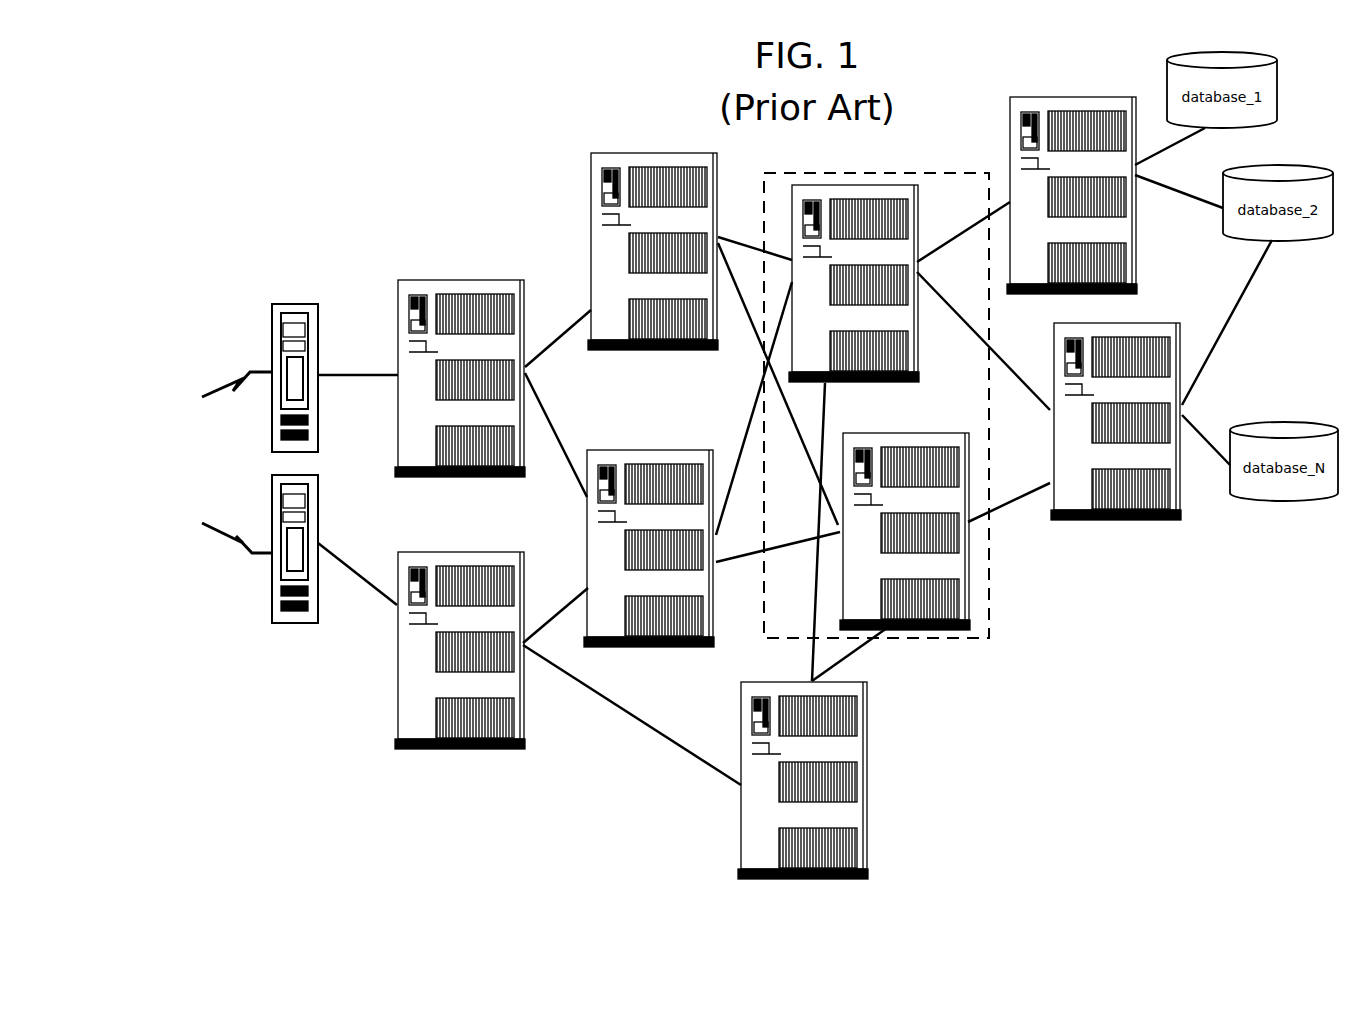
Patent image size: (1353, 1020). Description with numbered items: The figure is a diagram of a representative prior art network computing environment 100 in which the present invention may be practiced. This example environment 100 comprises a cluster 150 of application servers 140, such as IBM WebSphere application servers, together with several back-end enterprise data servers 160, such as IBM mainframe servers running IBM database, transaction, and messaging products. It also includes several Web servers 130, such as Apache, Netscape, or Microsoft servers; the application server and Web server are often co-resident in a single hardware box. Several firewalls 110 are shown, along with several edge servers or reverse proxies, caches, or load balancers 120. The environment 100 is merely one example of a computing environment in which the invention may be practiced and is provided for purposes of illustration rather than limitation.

The network computing environment 100 is at (340, 150).
The firewalls 110 is at (291, 458).
The edge servers 120 is at (462, 514).
The Web servers 130 is at (749, 503).
The application servers 140 is at (882, 407).
The cluster 150 is at (903, 405).
The back-end enterprise data servers 160 is at (1069, 308).